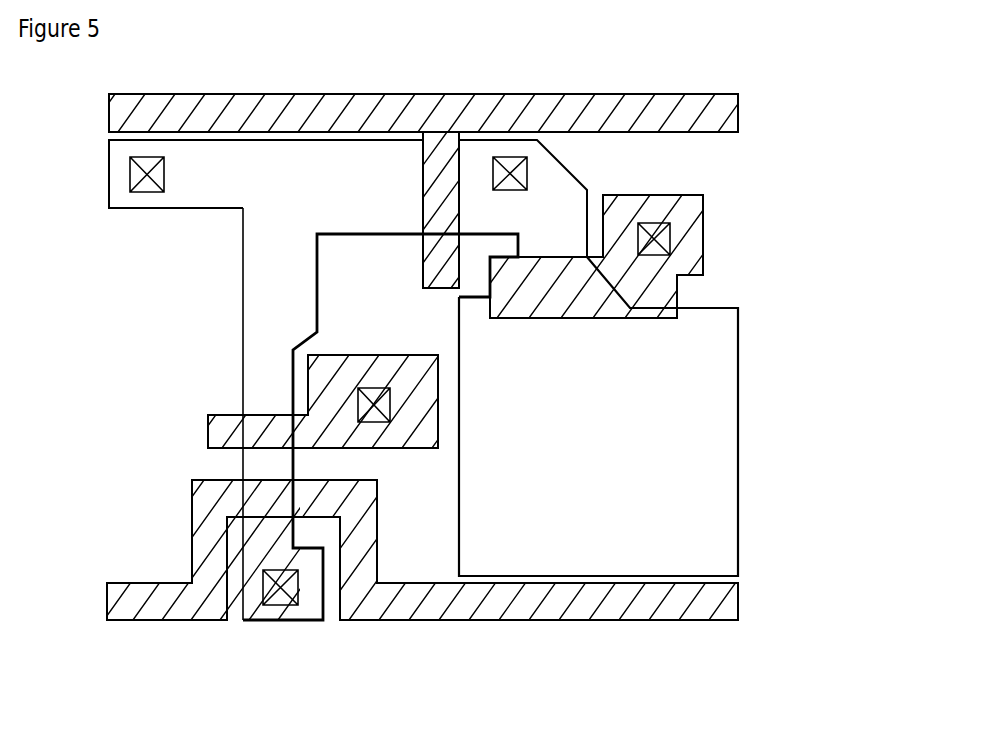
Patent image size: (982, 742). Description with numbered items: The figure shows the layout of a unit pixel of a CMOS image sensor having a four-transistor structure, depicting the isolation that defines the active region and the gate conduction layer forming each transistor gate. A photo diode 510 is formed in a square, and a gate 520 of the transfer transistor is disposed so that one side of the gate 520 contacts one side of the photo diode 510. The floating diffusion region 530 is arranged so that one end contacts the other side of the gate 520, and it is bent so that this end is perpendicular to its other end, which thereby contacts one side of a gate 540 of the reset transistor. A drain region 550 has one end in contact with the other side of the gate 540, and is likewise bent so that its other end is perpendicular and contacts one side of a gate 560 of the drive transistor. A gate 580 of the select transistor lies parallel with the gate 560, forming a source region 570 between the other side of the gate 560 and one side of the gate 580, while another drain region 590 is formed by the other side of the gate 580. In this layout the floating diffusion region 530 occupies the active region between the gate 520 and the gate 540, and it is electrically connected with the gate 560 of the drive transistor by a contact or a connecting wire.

The photo diode 510 is at (713, 315).
The gate of the transfer transistor 520 is at (580, 310).
The floating diffusion region 530 is at (565, 188).
The gate of the reset transistor 540 is at (433, 190).
The drain region 550 is at (268, 310).
The gate of the drive transistor 560 is at (213, 432).
The source region 570 is at (253, 470).
The gate of the select transistor 580 is at (265, 505).
The another drain region 590 is at (250, 610).